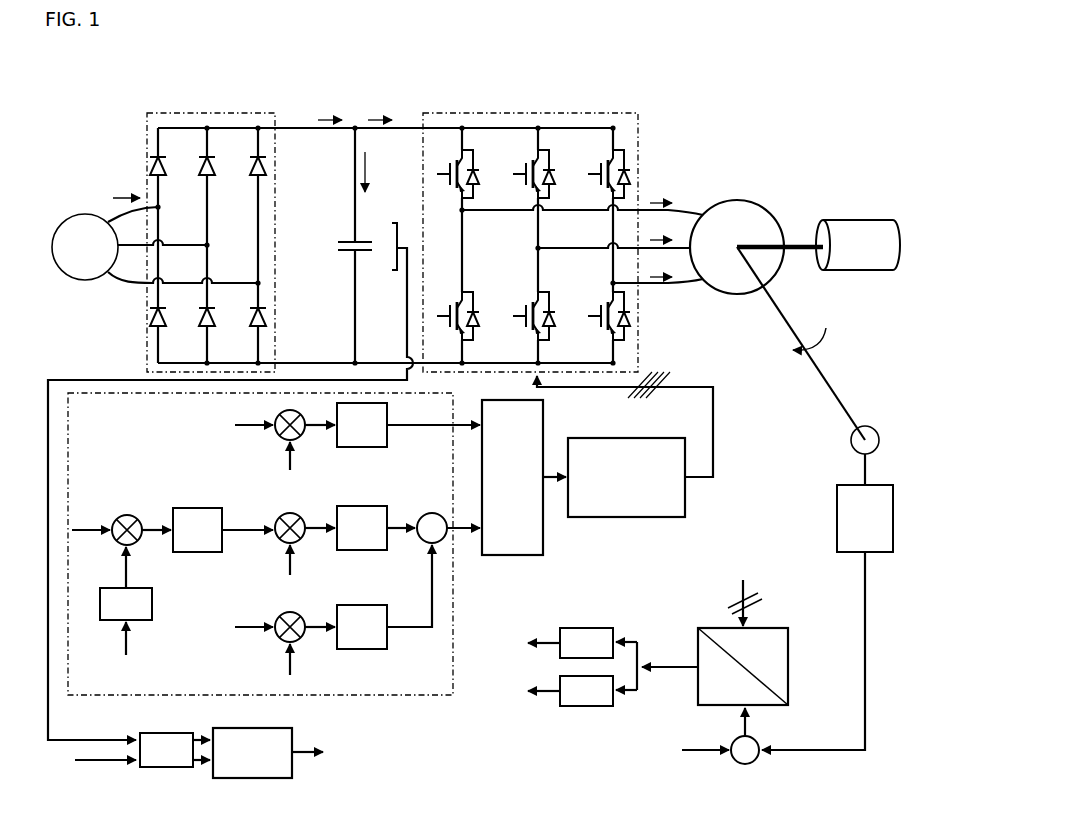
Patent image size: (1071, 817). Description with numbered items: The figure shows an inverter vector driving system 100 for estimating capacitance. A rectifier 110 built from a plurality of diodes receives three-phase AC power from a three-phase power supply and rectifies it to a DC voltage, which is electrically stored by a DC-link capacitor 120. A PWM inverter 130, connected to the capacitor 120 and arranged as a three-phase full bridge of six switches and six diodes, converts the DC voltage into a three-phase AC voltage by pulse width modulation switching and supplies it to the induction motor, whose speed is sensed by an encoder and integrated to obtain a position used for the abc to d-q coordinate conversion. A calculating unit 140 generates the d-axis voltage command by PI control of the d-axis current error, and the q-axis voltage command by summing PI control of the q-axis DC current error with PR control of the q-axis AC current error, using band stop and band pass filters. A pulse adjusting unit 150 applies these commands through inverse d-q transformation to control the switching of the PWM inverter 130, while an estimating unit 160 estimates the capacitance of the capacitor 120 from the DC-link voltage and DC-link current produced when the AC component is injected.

The inverter vector driving system 100 is at (806, 88).
The rectifier 110 is at (198, 113).
The DC-link capacitor 120 is at (342, 268).
The PWM inverter 130 is at (528, 113).
The calculating unit 140 is at (128, 382).
The pulse adjusting unit 150 is at (588, 438).
The estimating unit 160 is at (253, 728).